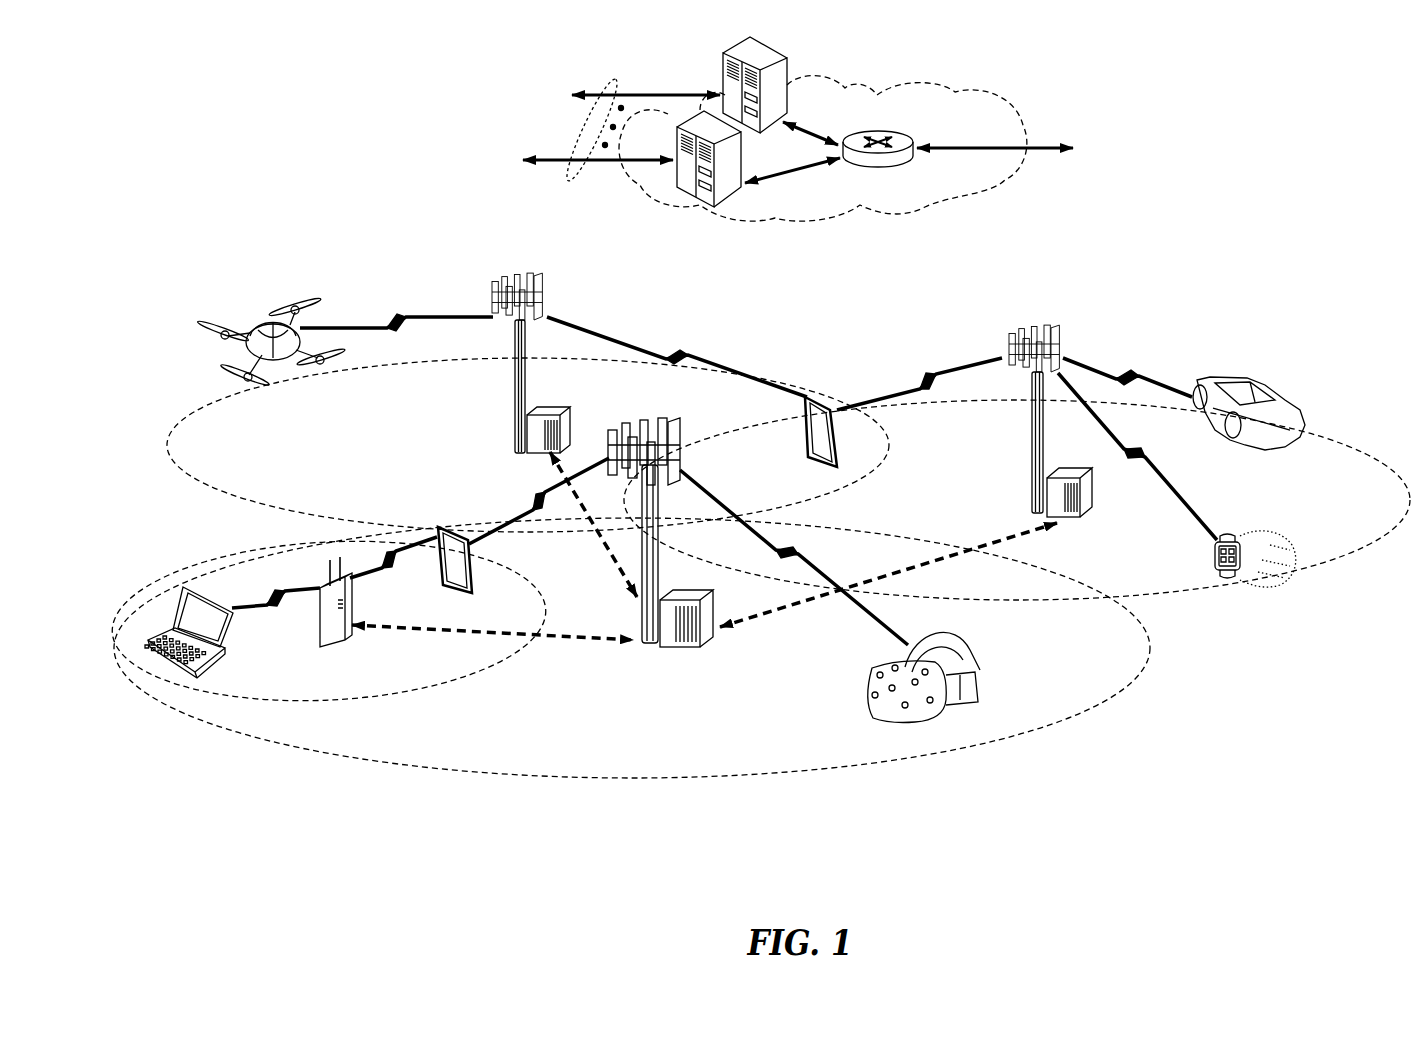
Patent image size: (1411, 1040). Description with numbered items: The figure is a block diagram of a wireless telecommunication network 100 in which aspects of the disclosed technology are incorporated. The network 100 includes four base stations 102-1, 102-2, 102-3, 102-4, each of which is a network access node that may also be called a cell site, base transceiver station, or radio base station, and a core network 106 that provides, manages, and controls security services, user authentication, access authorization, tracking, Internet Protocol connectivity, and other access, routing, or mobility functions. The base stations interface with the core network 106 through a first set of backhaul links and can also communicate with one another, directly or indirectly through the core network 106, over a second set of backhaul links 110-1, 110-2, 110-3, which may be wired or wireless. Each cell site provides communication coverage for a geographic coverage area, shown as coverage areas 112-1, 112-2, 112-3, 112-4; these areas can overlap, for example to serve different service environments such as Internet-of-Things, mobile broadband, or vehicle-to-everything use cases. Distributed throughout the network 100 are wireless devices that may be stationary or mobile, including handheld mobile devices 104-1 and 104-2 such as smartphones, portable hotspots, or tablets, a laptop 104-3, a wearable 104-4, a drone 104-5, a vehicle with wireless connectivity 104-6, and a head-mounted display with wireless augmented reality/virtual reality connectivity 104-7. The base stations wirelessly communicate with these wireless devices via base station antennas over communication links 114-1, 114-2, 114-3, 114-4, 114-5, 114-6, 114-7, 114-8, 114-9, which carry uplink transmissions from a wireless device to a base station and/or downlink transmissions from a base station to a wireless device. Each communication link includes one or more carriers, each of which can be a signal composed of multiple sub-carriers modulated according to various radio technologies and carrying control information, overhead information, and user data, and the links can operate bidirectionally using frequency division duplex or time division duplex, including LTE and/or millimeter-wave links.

The wireless telecommunication network 100 is at (1318, 140).
The base station 102-1 is at (646, 646).
The base station 102-2 is at (510, 402).
The base station 102-3 is at (1028, 437).
The base station 102-4 is at (320, 640).
The handheld mobile device 104-1 is at (473, 577).
The handheld mobile device 104-2 is at (802, 436).
The laptop 104-3 is at (172, 666).
The wearable 104-4 is at (1231, 534).
The drone 104-5 is at (282, 366).
The vehicle with wireless connectivity 104-6 is at (1272, 390).
The head-mounted display 104-7 is at (982, 661).
The core network 106 is at (912, 217).
The backhaul link 110-1 is at (387, 633).
The backhaul link 110-2 is at (950, 555).
The backhaul link 110-3 is at (608, 555).
The geographic coverage area 112-1 is at (577, 777).
The geographic coverage area 112-2 is at (450, 689).
The geographic coverage area 112-3 is at (230, 500).
The geographic coverage area 112-4 is at (1326, 436).
The communication link 114-1 is at (800, 556).
The communication link 114-2 is at (537, 502).
The communication link 114-3 is at (250, 611).
The communication link 114-4 is at (393, 574).
The communication link 114-5 is at (403, 320).
The communication link 114-6 is at (680, 355).
The communication link 114-7 is at (920, 368).
The communication link 114-8 is at (1158, 472).
The communication link 114-9 is at (1128, 362).